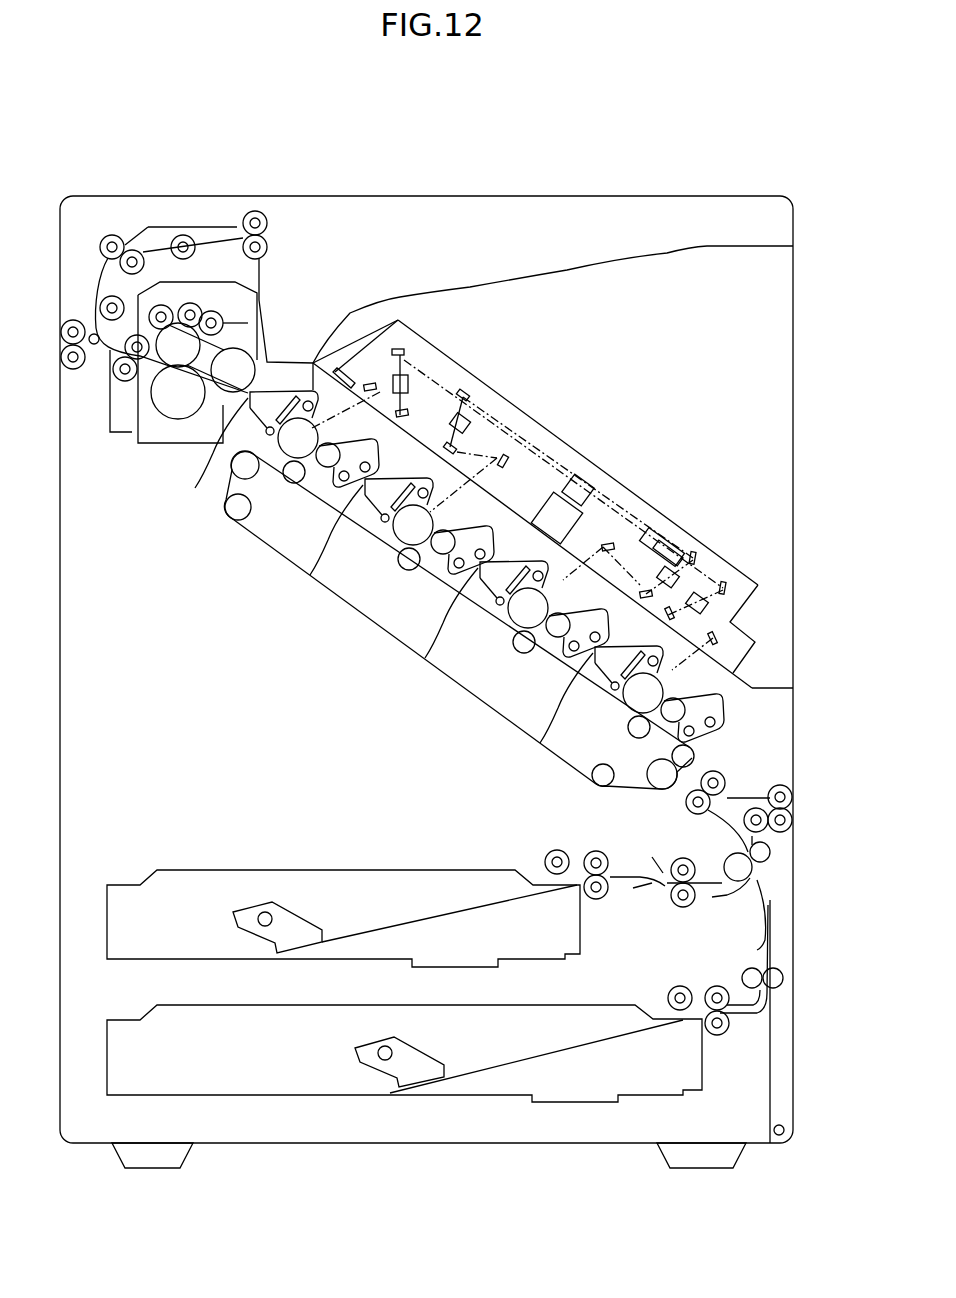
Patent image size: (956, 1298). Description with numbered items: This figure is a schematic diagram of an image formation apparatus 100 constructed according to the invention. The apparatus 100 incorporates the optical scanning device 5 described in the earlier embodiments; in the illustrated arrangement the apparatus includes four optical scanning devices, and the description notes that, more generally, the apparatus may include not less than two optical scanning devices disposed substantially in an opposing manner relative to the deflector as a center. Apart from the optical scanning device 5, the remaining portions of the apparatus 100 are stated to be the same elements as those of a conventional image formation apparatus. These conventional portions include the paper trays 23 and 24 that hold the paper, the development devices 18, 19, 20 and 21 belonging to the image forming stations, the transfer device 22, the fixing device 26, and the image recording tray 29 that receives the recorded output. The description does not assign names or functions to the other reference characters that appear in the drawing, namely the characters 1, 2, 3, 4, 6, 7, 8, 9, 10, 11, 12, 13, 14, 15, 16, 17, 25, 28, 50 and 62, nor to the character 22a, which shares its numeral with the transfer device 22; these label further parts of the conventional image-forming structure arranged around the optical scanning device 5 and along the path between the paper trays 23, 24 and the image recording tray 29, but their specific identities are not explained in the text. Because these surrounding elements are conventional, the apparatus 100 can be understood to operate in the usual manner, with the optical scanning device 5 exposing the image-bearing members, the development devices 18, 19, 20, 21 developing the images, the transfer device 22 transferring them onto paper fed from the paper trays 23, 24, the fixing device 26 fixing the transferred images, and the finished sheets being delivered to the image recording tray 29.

The image formation apparatus 100 is at (118, 103).
The discharge roller pair 28 is at (266, 225).
The image recording tray 29 is at (472, 287).
The charging unit 9 is at (313, 363).
The optical scanning device 5 is at (535, 418).
The polygon mirror motor 62 is at (598, 480).
The fixing device 26 is at (152, 435).
The development device 21 is at (262, 415).
The photosensitive drum 4 is at (297, 450).
The developing device 13 is at (360, 500).
The transfer roller 17 is at (298, 480).
The charging device 8 is at (433, 477).
The photosensitive drum 3 is at (405, 530).
The transfer roller 16 is at (410, 567).
The developing device 12 is at (466, 614).
The development device 20 is at (325, 560).
The intermediate transfer belt surface 22a is at (358, 613).
The development device 19 is at (440, 645).
The transfer device 22 is at (457, 712).
The development device 18 is at (545, 742).
The charging device 7 is at (543, 560).
The charging device 6 is at (660, 653).
The photosensitive drum 2 is at (518, 612).
The transfer roller 15 is at (523, 647).
The developing device 11 is at (590, 660).
The photosensitive drum 1 is at (627, 700).
The transfer roller 14 is at (637, 730).
The developing device 10 is at (727, 722).
The support frame 50 is at (742, 662).
The conveying roller 25 is at (685, 800).
The paper tray 23 is at (187, 878).
The paper tray 24 is at (165, 1025).